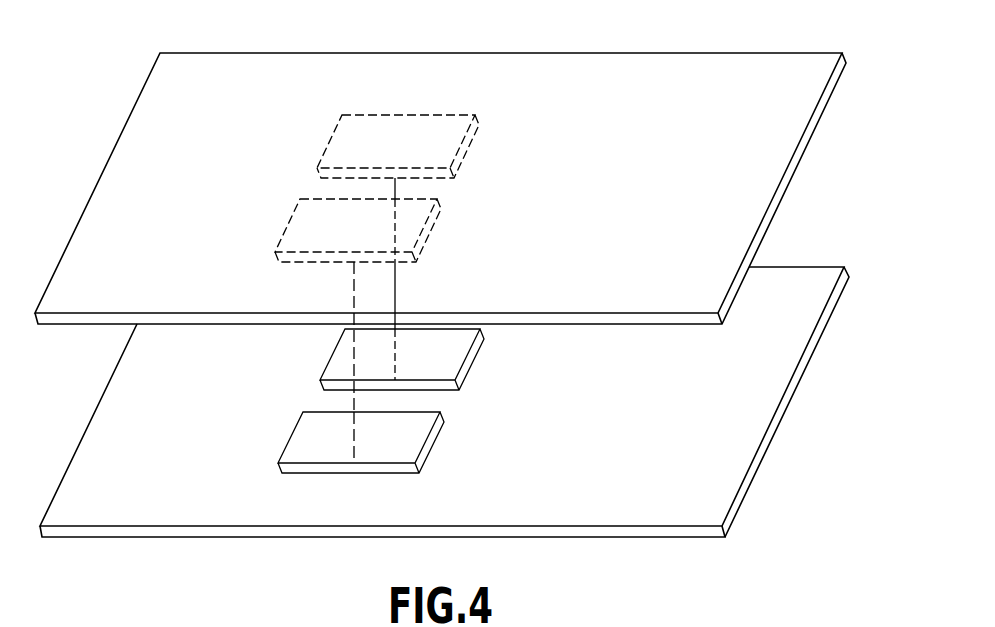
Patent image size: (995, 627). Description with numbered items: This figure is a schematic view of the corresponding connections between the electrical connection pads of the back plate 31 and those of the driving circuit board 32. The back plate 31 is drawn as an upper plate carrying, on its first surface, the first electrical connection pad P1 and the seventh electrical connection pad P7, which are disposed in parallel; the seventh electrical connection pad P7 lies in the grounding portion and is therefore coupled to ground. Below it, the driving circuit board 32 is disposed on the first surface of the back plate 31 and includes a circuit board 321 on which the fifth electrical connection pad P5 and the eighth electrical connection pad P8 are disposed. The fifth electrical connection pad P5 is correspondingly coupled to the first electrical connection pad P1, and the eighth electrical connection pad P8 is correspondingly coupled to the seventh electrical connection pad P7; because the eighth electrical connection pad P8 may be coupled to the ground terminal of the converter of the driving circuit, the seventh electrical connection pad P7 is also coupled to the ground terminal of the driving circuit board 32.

The back plate 31 is at (772, 203).
The driving circuit board 32 is at (118, 420).
The circuit board 321 is at (772, 427).
The seventh electrical connection pad P7 is at (443, 140).
The first electrical connection pad P1 is at (413, 218).
The eighth electrical connection pad P8 is at (453, 350).
The fifth electrical connection pad P5 is at (418, 432).